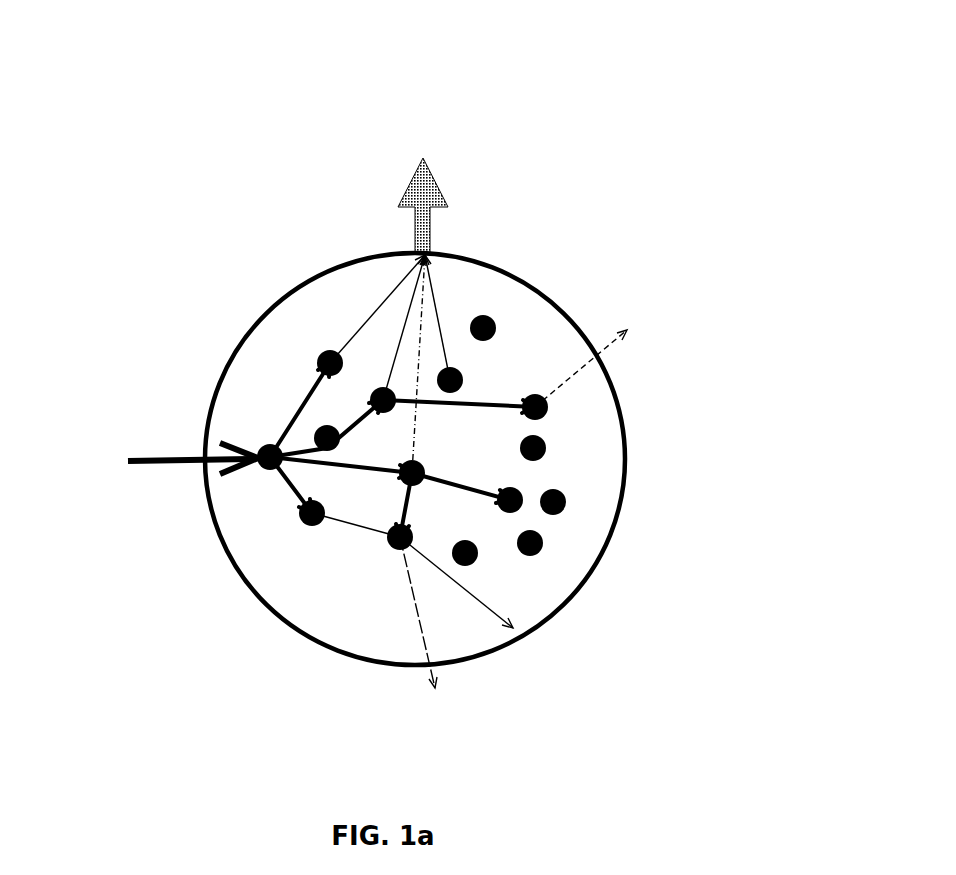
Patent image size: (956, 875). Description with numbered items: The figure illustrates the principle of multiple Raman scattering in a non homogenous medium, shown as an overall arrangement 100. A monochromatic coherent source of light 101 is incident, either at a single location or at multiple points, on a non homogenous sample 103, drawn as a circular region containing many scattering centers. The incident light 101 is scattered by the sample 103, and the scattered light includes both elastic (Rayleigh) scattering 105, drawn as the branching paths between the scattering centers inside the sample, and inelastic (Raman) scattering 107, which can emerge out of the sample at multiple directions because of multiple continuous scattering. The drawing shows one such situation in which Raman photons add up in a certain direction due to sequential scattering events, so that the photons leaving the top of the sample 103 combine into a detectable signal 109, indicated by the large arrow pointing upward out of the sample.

The optical system 100 is at (673, 668).
The monochromatic coherent source of light 101 is at (136, 458).
The non homogenous sample 103 is at (497, 650).
The elastic (Rayleigh) scattering 105 is at (298, 400).
The inelastic (Raman) scattering 107 is at (563, 392).
The detectable signal 109 is at (430, 157).